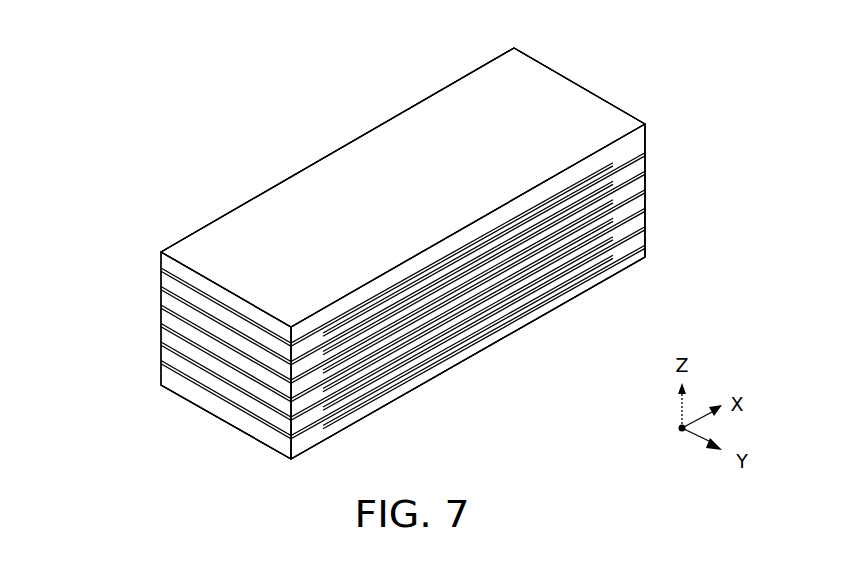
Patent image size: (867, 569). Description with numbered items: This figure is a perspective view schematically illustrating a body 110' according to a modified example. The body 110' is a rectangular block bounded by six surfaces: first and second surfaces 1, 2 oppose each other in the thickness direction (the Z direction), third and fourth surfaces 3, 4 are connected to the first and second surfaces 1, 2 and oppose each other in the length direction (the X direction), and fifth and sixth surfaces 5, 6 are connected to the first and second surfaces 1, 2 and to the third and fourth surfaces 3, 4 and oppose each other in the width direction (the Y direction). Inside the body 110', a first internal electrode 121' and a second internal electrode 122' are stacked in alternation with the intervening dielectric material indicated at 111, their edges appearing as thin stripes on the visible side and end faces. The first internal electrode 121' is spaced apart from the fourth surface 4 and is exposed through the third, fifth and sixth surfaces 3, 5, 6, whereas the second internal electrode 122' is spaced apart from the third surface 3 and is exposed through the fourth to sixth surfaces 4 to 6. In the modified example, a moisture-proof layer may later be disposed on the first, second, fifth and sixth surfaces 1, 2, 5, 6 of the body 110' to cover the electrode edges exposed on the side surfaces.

The first surface 1 is at (440, 105).
The second surface 2 is at (424, 372).
The third surface 3 is at (190, 384).
The fourth surface 4 is at (603, 114).
The fifth surface 5 is at (518, 316).
The sixth surface 6 is at (259, 210).
The body 110' is at (403, 187).
The dielectric layer 111 is at (193, 296).
The first internal electrode 121' is at (341, 255).
The second internal electrode 122' is at (529, 236).